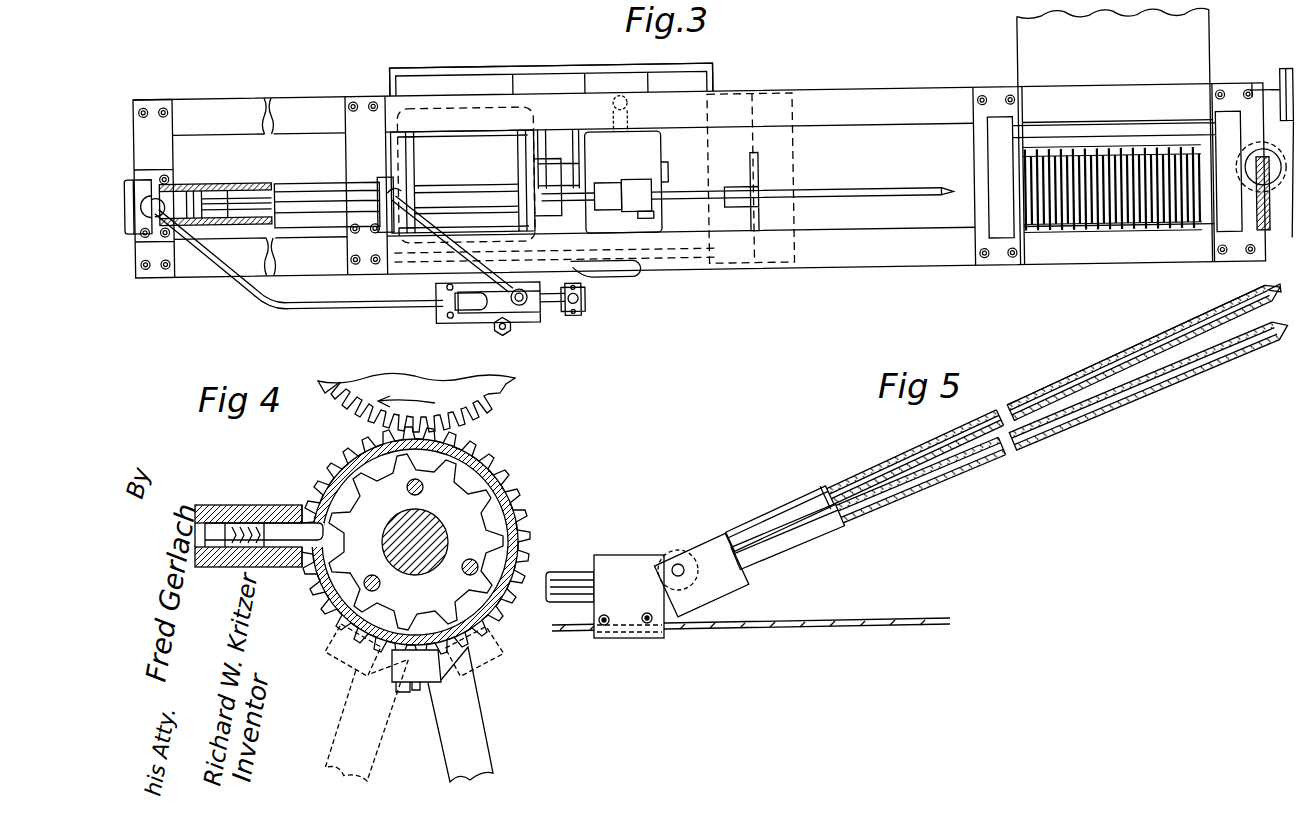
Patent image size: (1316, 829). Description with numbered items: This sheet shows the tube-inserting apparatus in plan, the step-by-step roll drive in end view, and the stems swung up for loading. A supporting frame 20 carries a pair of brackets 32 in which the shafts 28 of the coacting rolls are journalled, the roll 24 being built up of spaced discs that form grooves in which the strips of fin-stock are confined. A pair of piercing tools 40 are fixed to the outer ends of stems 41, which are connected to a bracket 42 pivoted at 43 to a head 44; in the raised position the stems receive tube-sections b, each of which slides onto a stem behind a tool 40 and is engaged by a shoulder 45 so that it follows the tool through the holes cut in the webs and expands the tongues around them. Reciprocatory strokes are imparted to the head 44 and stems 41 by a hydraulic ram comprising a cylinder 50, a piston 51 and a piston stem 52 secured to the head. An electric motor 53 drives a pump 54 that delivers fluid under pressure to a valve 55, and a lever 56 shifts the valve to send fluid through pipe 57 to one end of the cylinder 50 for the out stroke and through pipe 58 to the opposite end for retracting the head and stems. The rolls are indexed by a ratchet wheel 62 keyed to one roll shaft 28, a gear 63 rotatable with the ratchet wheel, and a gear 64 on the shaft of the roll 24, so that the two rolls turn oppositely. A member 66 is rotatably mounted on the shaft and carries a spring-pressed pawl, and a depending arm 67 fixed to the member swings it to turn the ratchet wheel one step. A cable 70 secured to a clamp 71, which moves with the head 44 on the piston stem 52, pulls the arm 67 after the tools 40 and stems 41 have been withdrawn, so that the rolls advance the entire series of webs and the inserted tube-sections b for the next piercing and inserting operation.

In FIG. 3, the frame 20 is at (699, 143).
In FIG. 3, the roll 24 is at (1061, 248).
In FIG. 4, the shaft 28 is at (430, 547).
In FIG. 3, the supporting bracket 32 is at (987, 152).
In FIG. 3, the piercing tool 40 is at (945, 191).
In FIG. 5, the piercing tool 40 is at (1285, 283).
In FIG. 3, the stem 41 is at (838, 190).
In FIG. 5, the stem 41 is at (1092, 366).
In FIG. 3, the bracket 42 is at (652, 222).
In FIG. 5, the bracket 42 is at (702, 575).
In FIG. 3, the pivot 43 is at (629, 186).
In FIG. 5, the pivot 43 is at (683, 562).
In FIG. 3, the head 44 is at (600, 188).
In FIG. 5, the head 44 is at (636, 566).
In FIG. 3, the shoulder 45 is at (723, 187).
In FIG. 5, the shoulder 45 is at (814, 503).
In FIG. 3, the cylinder 50 is at (312, 180).
In FIG. 3, the piston 51 is at (196, 192).
In FIG. 3, the stem 52 is at (432, 196).
In FIG. 3, the electric motor 53 is at (552, 111).
In FIG. 3, the pump 54 is at (659, 146).
In FIG. 3, the valve 55 is at (526, 328).
In FIG. 3, the lever 56 is at (582, 308).
In FIG. 3, the pipe 57 is at (255, 284).
In FIG. 3, the pipe 58 is at (552, 246).
In FIG. 4, the ratchet wheel 62 is at (468, 510).
In FIG. 4, the gear 63 is at (272, 552).
In FIG. 3, the gear 64 is at (1272, 236).
In FIG. 4, the gear 64 is at (497, 400).
In FIG. 3, the member 66 is at (1276, 172).
In FIG. 4, the arm 67 is at (484, 721).
In FIG. 5, the cable 70 is at (785, 624).
In FIG. 5, the clamp 71 is at (642, 632).
In FIG. 5, the tube-section b is at (1041, 399).